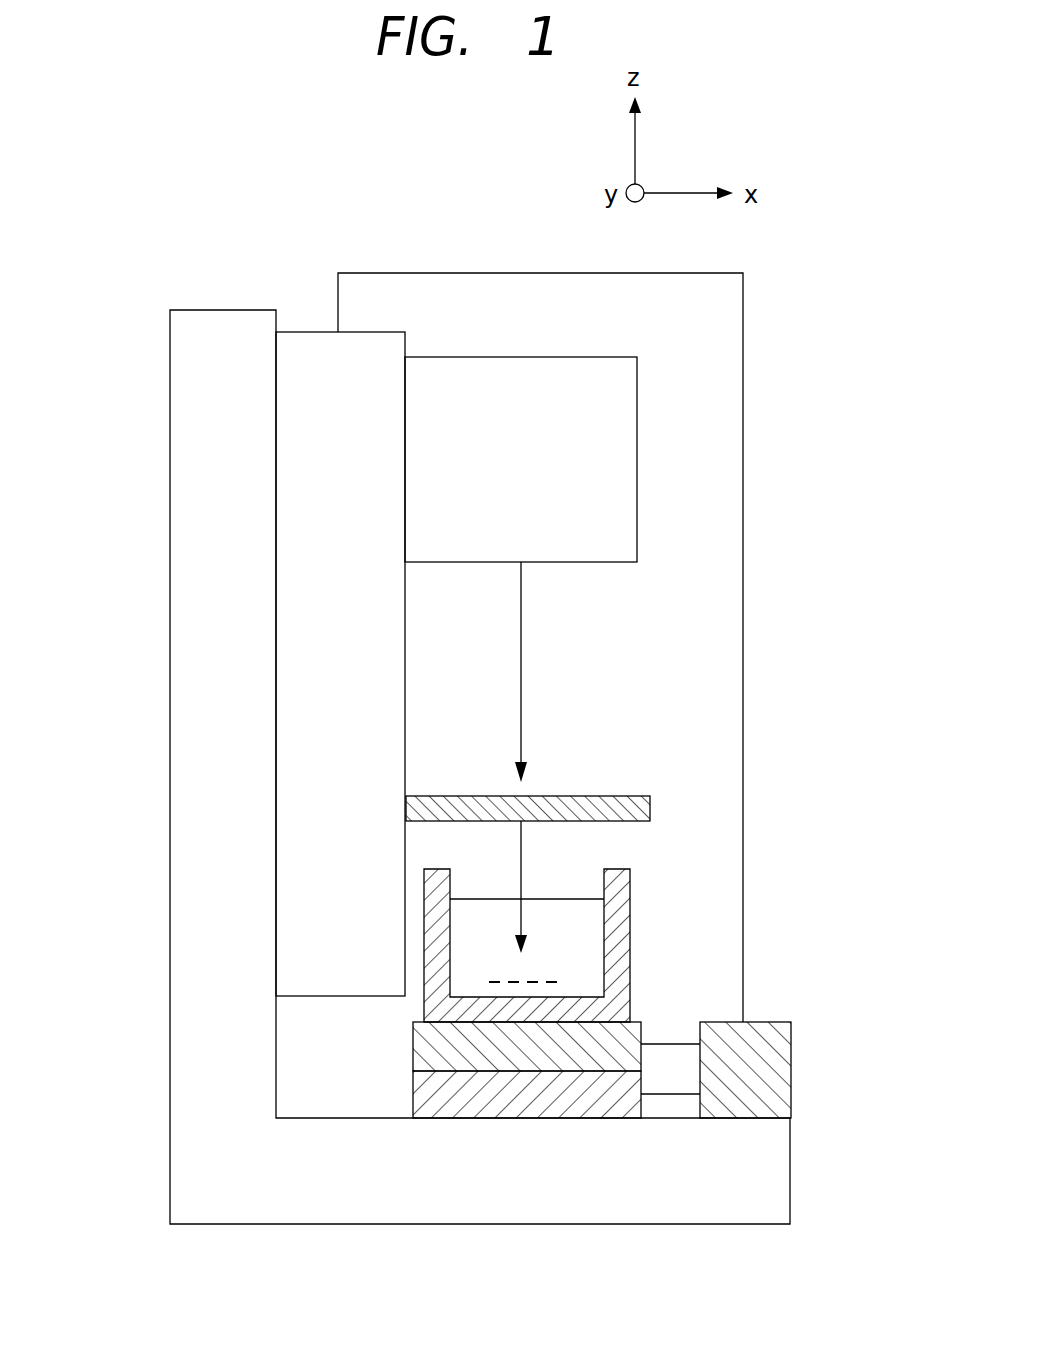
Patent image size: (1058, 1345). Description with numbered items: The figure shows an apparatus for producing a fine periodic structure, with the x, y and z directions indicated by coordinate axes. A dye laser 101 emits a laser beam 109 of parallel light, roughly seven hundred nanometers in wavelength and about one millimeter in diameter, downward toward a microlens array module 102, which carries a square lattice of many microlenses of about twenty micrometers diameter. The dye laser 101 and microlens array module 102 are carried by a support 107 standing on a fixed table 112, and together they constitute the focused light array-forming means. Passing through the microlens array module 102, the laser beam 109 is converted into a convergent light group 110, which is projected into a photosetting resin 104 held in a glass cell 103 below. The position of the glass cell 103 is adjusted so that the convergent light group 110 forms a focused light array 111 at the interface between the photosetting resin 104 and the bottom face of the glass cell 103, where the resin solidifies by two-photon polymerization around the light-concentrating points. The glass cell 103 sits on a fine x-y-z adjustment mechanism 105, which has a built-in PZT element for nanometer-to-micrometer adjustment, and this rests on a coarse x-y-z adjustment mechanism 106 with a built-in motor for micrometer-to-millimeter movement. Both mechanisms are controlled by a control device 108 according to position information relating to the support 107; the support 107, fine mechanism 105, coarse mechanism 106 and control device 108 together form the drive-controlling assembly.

The dye laser 101 is at (617, 457).
The microlens array module 102 is at (650, 800).
The glass cell 103 is at (620, 922).
The photosetting resin 104 is at (590, 962).
The fine x-y-z adjustment mechanism 105 is at (610, 1053).
The coarse x-y-z adjustment mechanism 106 is at (565, 1117).
The support 107 is at (312, 350).
The control device 108 is at (773, 1070).
The laser beam 109 is at (521, 663).
The convergent light group 110 is at (521, 857).
The focused light array 111 is at (510, 985).
The fixed table 112 is at (183, 503).